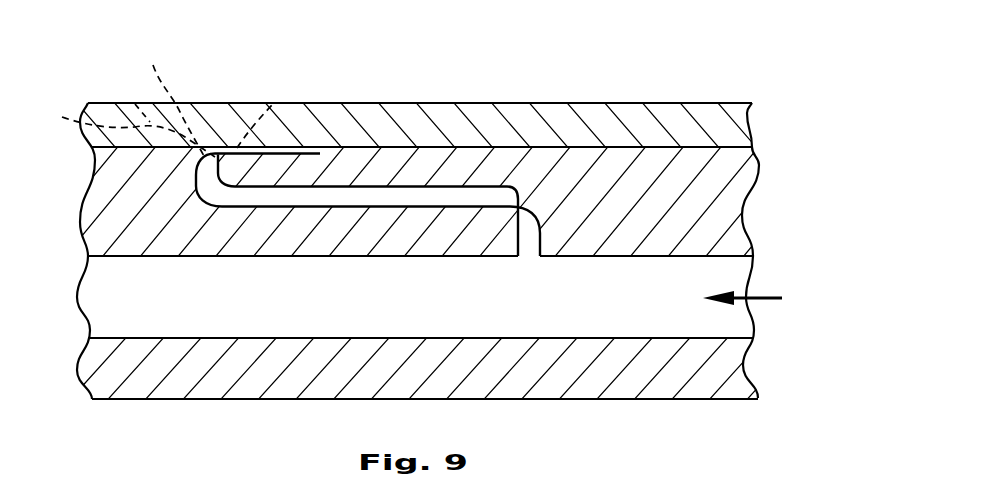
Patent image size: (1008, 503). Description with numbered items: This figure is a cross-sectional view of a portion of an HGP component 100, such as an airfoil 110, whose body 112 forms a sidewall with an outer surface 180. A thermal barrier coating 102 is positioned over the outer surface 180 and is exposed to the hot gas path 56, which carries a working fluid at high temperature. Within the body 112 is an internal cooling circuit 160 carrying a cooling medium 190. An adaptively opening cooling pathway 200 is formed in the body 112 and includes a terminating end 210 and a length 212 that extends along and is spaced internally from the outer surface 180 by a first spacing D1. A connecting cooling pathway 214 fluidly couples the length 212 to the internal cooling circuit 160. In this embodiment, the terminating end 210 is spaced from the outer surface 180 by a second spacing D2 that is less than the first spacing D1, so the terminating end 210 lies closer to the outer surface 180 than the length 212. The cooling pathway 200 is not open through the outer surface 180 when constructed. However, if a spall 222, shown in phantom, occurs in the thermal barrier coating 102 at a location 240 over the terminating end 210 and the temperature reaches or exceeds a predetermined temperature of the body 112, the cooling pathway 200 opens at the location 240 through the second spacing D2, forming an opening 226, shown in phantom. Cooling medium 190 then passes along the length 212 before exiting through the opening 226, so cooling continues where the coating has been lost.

The hot gas path 56 is at (443, 206).
The HGP component 100 is at (464, 206).
The thermal barrier coating 102 is at (451, 87).
The airfoil 110 is at (443, 181).
The body 112 is at (431, 201).
The internal cooling circuit 160 is at (450, 310).
The outer surface 180 is at (108, 147).
The cooling medium 190 is at (767, 296).
The cooling pathway 200 is at (285, 189).
The terminating end 210 is at (205, 163).
The length 212 is at (441, 195).
The connecting cooling pathway 214 is at (527, 242).
The spall 222 is at (166, 100).
The opening 226 is at (144, 128).
The location 240 is at (205, 94).
The first spacing D1 is at (387, 189).
The second spacing D2 is at (301, 156).